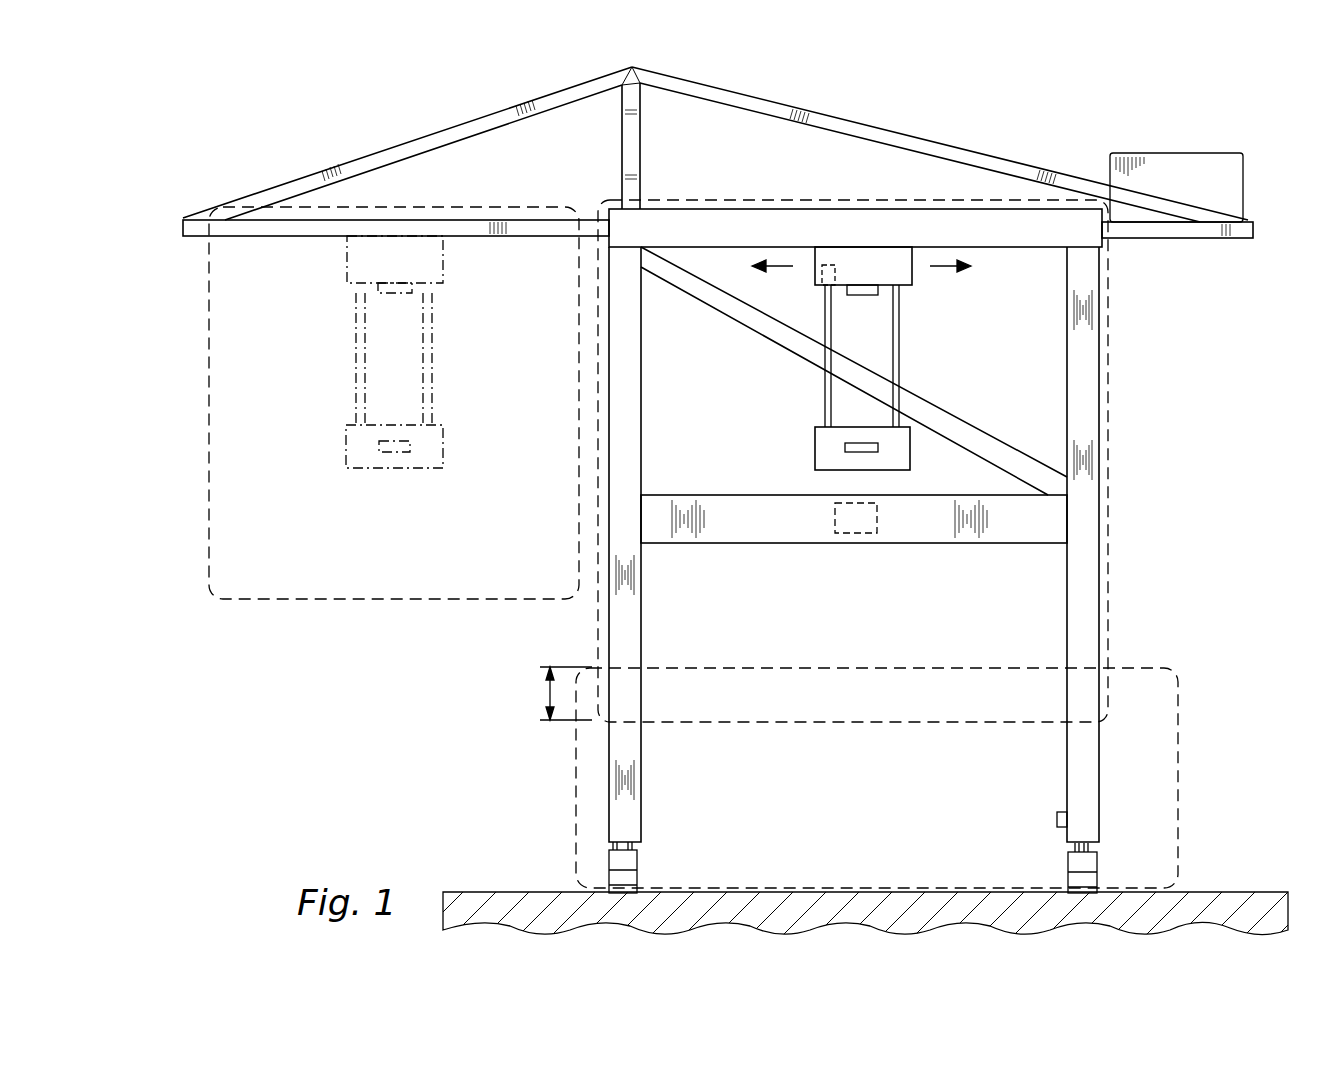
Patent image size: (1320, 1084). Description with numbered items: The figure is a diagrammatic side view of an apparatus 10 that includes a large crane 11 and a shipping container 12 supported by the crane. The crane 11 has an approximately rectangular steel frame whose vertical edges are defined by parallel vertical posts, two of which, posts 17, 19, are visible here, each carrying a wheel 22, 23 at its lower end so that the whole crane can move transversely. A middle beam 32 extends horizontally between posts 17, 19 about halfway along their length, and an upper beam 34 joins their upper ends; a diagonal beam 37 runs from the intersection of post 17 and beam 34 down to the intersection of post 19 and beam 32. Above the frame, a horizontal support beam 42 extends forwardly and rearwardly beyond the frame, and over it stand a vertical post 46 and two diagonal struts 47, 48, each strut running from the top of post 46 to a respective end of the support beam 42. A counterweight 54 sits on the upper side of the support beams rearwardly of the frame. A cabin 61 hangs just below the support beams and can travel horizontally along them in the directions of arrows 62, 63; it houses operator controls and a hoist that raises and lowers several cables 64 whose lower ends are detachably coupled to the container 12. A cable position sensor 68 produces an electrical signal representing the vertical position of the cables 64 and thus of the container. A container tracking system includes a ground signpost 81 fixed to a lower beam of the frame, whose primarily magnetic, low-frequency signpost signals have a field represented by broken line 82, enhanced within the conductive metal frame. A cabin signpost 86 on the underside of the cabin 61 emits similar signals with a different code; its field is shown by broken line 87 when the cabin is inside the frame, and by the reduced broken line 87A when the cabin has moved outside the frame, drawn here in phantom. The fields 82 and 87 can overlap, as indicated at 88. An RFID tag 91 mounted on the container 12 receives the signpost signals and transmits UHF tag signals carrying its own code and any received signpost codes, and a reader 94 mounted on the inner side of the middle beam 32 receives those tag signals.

The apparatus 10 is at (1232, 352).
The crane 11 is at (1020, 122).
The container 12 is at (815, 447).
The vertical post 17 is at (641, 608).
The vertical post 19 is at (1067, 614).
The wheel 22 is at (638, 863).
The wheel 23 is at (1097, 866).
The middle beam 32 is at (920, 545).
The upper beam 34 is at (1020, 249).
The diagonal beam 37 is at (942, 406).
The support beam 42 is at (299, 236).
The vertical post 46 is at (622, 143).
The diagonal strut 47 is at (408, 140).
The diagonal strut 48 is at (920, 136).
The counterweight 54 is at (1243, 188).
The cabin 61 is at (912, 257).
The arrow 62 is at (785, 270).
The arrow 63 is at (945, 270).
The cables 64 is at (900, 347).
The cable position sensor 68 is at (836, 268).
The ground signpost 81 is at (1057, 818).
The transmission range of ground signpost 82 is at (1178, 805).
The cabin signpost 86 is at (862, 297).
The transmission range of cabin signpost 87 is at (1108, 470).
The reduced transmission range of cabin signpost 87A is at (336, 599).
The field overlap 88 is at (545, 697).
The RFID tag 91 is at (878, 448).
The reader 94 is at (835, 512).